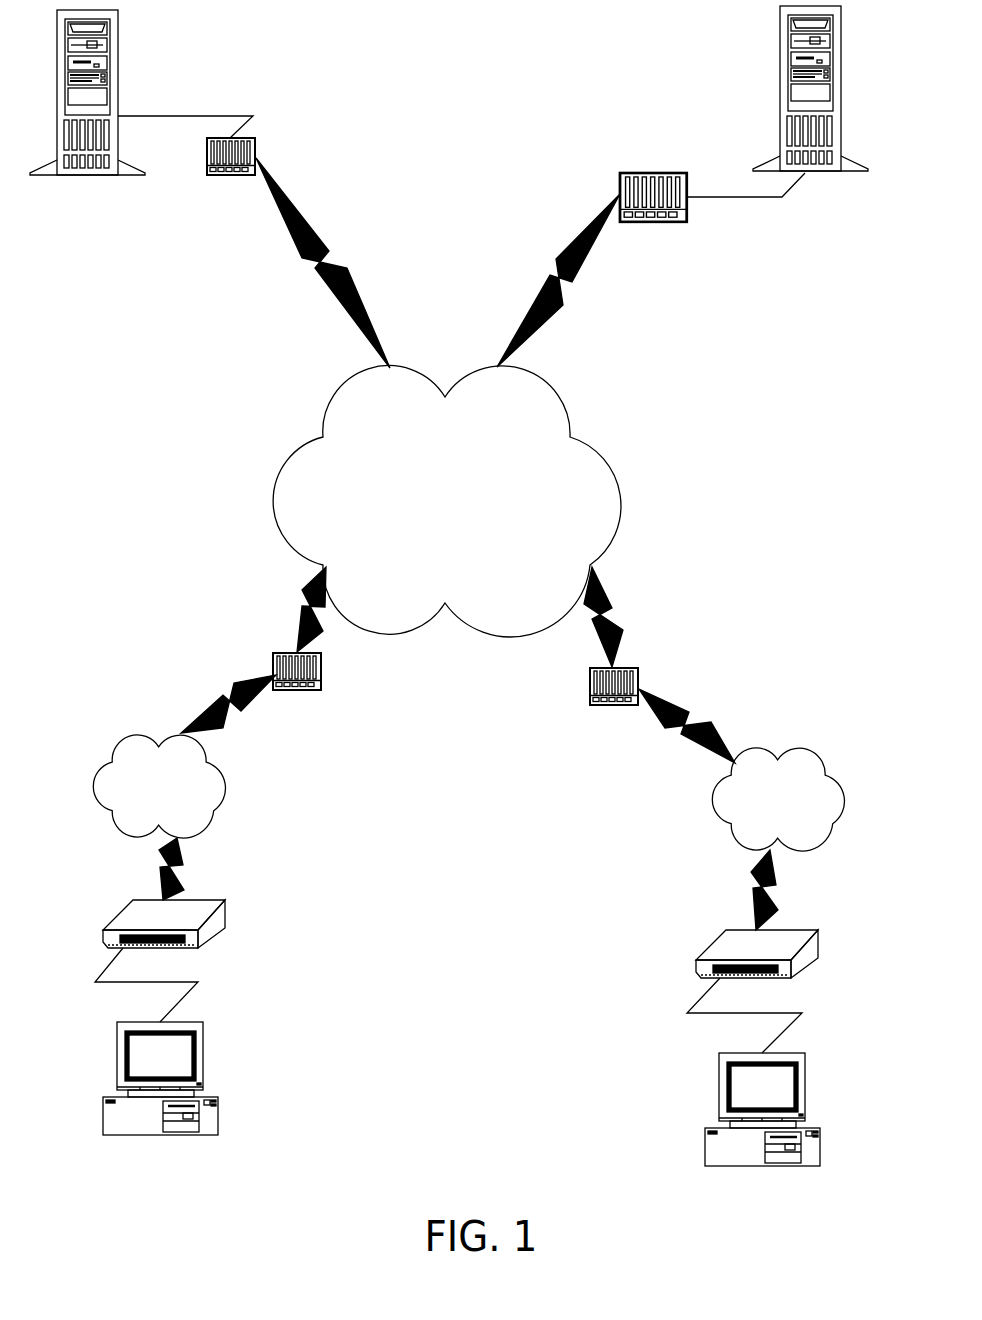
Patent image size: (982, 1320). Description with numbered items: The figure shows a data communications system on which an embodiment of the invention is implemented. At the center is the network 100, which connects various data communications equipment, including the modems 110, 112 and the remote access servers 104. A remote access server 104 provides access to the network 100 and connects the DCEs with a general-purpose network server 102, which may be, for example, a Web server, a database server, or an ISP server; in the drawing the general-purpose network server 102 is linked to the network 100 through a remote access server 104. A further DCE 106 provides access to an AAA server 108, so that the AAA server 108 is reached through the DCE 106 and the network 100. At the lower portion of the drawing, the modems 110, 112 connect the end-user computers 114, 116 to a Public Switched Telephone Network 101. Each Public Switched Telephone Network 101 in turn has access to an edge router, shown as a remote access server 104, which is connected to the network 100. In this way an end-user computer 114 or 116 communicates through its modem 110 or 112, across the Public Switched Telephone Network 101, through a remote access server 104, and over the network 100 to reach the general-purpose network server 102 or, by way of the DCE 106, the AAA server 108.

The network 100 is at (447, 501).
The Public Switched Telephone Network 101 is at (468, 793).
The general-purpose network server 102 is at (87, 106).
The remote access server 104 is at (422, 436).
The DCE 106 is at (653, 212).
The AAA server 108 is at (810, 103).
The modem 110 is at (164, 939).
The modem 112 is at (757, 969).
The end-user computer 114 is at (160, 1093).
The end-user computer 116 is at (762, 1124).